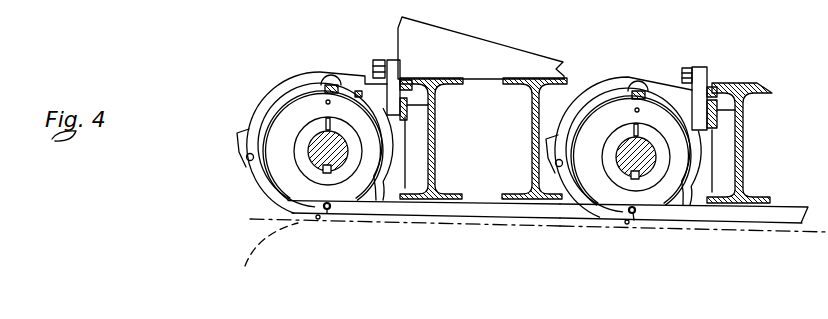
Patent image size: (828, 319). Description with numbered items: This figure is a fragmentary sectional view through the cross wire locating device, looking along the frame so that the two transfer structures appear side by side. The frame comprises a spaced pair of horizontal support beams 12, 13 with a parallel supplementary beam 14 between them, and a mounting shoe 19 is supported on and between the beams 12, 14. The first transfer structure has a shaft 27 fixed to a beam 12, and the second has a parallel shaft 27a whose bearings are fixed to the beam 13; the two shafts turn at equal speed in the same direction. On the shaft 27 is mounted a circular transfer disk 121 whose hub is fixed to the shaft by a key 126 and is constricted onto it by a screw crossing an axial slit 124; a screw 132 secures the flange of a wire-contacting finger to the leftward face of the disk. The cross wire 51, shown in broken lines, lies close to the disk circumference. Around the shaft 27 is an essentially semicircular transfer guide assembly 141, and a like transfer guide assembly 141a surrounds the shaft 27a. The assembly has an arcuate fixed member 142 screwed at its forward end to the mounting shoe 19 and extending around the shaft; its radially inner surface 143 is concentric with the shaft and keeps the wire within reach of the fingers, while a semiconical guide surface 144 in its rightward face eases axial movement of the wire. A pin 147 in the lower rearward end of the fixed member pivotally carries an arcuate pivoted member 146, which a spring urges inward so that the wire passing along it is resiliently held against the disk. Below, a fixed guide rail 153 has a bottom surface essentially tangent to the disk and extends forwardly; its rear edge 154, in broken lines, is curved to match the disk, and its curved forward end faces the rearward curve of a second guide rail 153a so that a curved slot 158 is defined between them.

The support beam 12 is at (445, 86).
The support beam 13 is at (768, 90).
The supplementary beam 14 is at (517, 88).
The mounting shoe 19 is at (494, 50).
The shaft 27 is at (338, 158).
The shaft 27a is at (641, 147).
The cross wire 51 is at (322, 84).
The transfer disk 121 is at (280, 88).
The axial slit 124 is at (329, 121).
The key 126 is at (330, 174).
The screw 132 is at (322, 103).
The transfer guide assembly 141 is at (247, 107).
The transfer guide assembly 141a is at (641, 50).
The fixed member 142 is at (276, 96).
The radially inner surface 143 is at (360, 92).
The semiconical guide surface 144 is at (328, 74).
The pivoted member 146 is at (260, 178).
The pin 147 is at (246, 158).
The guide rail 153 is at (447, 210).
The guide rail 153a is at (692, 216).
The rear edge 154 is at (385, 240).
The curved slot 158 is at (592, 225).